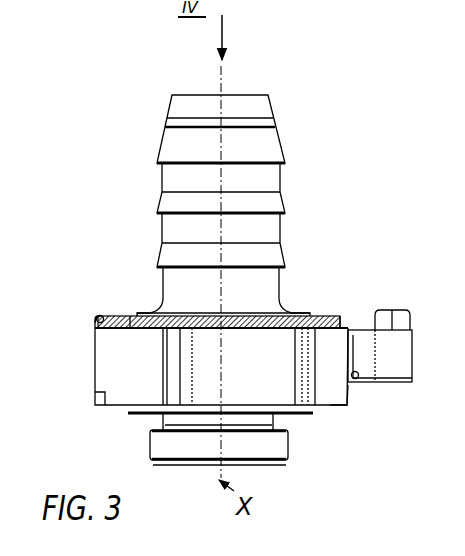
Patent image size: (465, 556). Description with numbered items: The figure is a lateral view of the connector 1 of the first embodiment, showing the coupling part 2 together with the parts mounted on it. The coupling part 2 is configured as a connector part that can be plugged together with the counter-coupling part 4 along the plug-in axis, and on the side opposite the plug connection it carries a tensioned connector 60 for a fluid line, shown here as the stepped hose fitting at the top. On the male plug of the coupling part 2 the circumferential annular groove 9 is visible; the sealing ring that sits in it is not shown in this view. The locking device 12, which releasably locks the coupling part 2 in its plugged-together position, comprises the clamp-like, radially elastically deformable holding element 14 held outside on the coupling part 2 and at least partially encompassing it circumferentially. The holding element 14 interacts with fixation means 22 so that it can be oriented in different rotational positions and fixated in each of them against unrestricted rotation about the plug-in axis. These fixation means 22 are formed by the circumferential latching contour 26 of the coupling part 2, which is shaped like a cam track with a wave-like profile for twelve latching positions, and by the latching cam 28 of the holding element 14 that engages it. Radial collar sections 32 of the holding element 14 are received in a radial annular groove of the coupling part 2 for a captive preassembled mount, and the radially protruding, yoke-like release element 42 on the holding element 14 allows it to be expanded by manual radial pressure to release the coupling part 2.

The connector 1 is at (340, 258).
The coupling part 2 is at (298, 451).
The counter-coupling part 4 is at (137, 417).
The annular groove 9 is at (161, 422).
The locking device 12 is at (83, 363).
The holding element 14 is at (348, 399).
The fixation means 22 is at (117, 308).
The latching contour 26 is at (306, 324).
The latching cam 28 is at (101, 314).
The radial collar section 32 is at (132, 312).
The release element 42 is at (402, 362).
The tensioned connector 60 is at (272, 173).